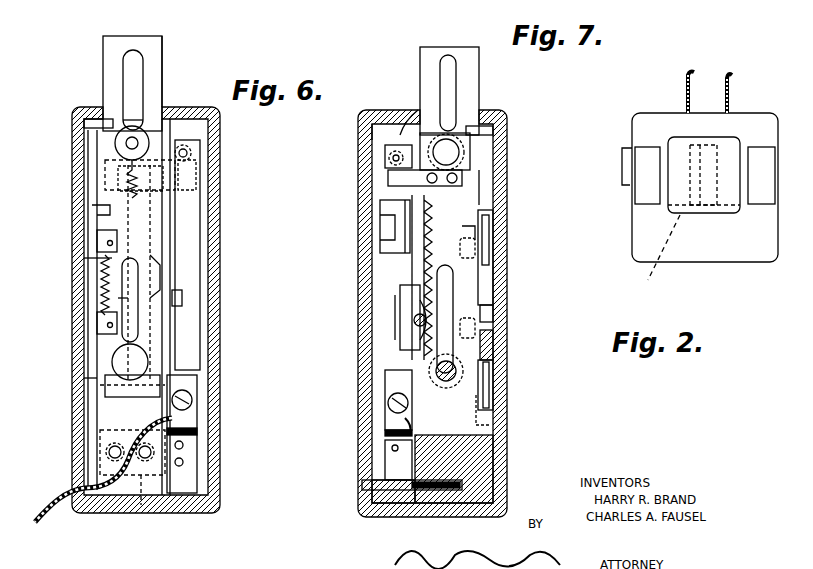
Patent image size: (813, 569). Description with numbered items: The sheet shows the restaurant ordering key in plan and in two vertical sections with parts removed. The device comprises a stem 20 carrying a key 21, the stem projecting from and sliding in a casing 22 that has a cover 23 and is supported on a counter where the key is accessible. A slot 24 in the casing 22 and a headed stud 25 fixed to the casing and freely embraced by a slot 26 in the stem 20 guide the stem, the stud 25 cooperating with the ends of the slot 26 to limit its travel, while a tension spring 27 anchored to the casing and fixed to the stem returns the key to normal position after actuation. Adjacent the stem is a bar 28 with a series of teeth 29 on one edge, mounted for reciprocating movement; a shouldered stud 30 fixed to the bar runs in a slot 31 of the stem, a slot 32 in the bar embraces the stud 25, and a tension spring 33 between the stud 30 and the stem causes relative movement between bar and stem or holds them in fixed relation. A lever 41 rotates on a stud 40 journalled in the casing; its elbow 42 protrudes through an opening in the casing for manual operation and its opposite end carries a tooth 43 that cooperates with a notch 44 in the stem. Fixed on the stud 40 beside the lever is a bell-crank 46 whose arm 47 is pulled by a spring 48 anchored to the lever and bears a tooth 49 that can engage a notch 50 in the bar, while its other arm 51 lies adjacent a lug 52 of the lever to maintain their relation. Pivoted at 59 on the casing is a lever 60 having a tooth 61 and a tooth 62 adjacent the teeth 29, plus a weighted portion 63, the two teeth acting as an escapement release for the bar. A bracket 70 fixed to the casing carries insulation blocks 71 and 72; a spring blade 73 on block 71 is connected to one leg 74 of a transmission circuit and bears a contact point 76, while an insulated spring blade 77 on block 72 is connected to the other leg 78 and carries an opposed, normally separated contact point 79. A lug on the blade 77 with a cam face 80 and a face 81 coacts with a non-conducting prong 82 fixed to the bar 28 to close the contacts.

In FIG. 6, the stem 20 is at (150, 88).
In FIG. 7, the stem 20 is at (470, 88).
In FIG. 2, the stem 20 is at (686, 219).
In FIG. 2, the key 21 is at (668, 190).
In FIG. 6, the casing 22 is at (80, 110).
In FIG. 7, the casing 22 is at (500, 162).
In FIG. 2, the casing 22 is at (640, 130).
In FIG. 6, the cover 23 is at (166, 110).
In FIG. 7, the cover 23 is at (372, 126).
In FIG. 2, the cover 23 is at (700, 256).
In FIG. 6, the slot 24 is at (130, 125).
In FIG. 6, the headed stud 25 is at (118, 360).
In FIG. 7, the headed stud 25 is at (448, 382).
In FIG. 6, the slot 26 is at (128, 262).
In FIG. 6, the spring 27 is at (128, 385).
In FIG. 7, the bar 28 is at (480, 200).
In FIG. 6, the teeth 29 is at (188, 256).
In FIG. 7, the teeth 29 is at (410, 262).
In FIG. 6, the shouldered stud 30 is at (125, 142).
In FIG. 7, the shouldered stud 30 is at (455, 150).
In FIG. 6, the slot 31 is at (136, 80).
In FIG. 7, the slot 31 is at (452, 78).
In FIG. 7, the slot 32 is at (450, 285).
In FIG. 6, the spring 33 is at (128, 172).
In FIG. 7, the stud 40 is at (494, 313).
In FIG. 6, the lever 41 is at (92, 378).
In FIG. 7, the lever 41 is at (495, 240).
In FIG. 7, the elbow 42 is at (495, 418).
In FIG. 2, the elbow 42 is at (622, 165).
In FIG. 6, the tooth 43 is at (100, 208).
In FIG. 6, the notch 44 is at (105, 124).
In FIG. 7, the notch 44 is at (480, 126).
In FIG. 6, the bell-crank 46 is at (84, 258).
In FIG. 7, the bell-crank 46 is at (494, 345).
In FIG. 6, the arm 47 is at (105, 240).
In FIG. 7, the arm 47 is at (476, 245).
In FIG. 6, the spring 48 is at (110, 280).
In FIG. 7, the tooth 49 is at (492, 214).
In FIG. 7, the notch 50 is at (470, 226).
In FIG. 6, the arm 51 is at (125, 298).
In FIG. 6, the lug 52 is at (100, 322).
In FIG. 7, the pivot 59 is at (400, 330).
In FIG. 6, the lever 60 is at (185, 268).
In FIG. 7, the lever 60 is at (398, 320).
In FIG. 6, the tooth 61 is at (160, 280).
In FIG. 7, the tooth 61 is at (398, 316).
In FIG. 6, the tooth 62 is at (200, 386).
In FIG. 7, the tooth 62 is at (385, 378).
In FIG. 6, the weighted portion 63 is at (168, 190).
In FIG. 6, the bracket 70 is at (145, 520).
In FIG. 7, the bracket 70 is at (385, 455).
In FIG. 6, the block 71 is at (198, 431).
In FIG. 7, the block 72 is at (385, 433).
In FIG. 6, the spring blade 73 is at (185, 332).
In FIG. 6, the leg 74 is at (38, 522).
In FIG. 2, the leg 74 is at (684, 82).
In FIG. 6, the contact point 76 is at (188, 153).
In FIG. 7, the spring blade 77 is at (400, 132).
In FIG. 7, the leg 78 is at (410, 420).
In FIG. 2, the leg 78 is at (735, 80).
In FIG. 7, the contact point 79 is at (393, 156).
In FIG. 7, the face 80 is at (385, 214).
In FIG. 7, the face 81 is at (385, 232).
In FIG. 7, the prong 82 is at (388, 176).